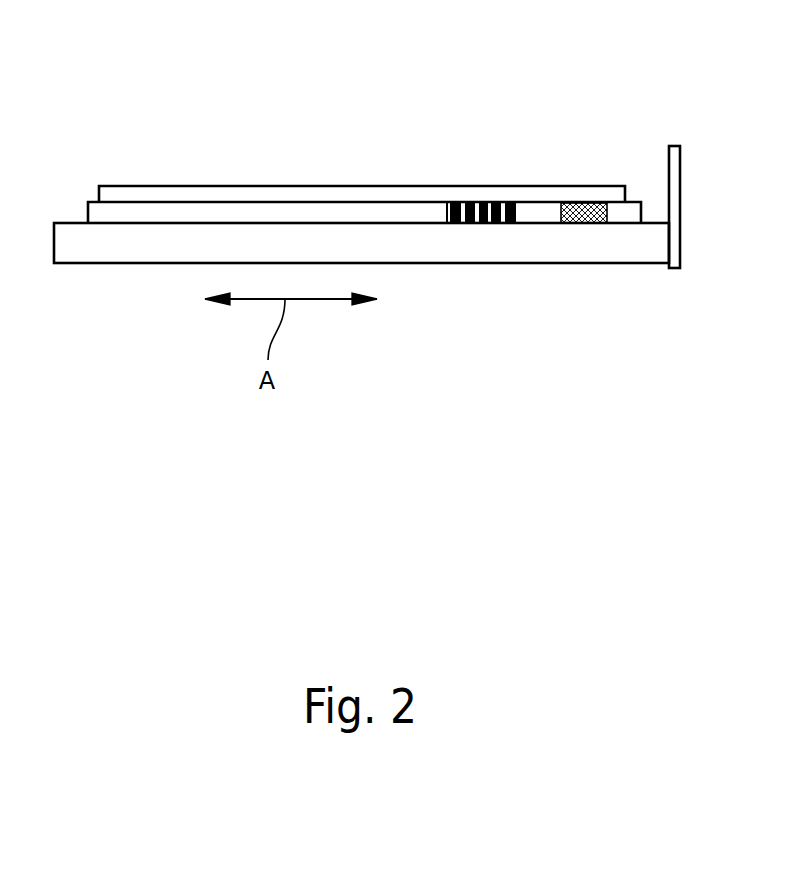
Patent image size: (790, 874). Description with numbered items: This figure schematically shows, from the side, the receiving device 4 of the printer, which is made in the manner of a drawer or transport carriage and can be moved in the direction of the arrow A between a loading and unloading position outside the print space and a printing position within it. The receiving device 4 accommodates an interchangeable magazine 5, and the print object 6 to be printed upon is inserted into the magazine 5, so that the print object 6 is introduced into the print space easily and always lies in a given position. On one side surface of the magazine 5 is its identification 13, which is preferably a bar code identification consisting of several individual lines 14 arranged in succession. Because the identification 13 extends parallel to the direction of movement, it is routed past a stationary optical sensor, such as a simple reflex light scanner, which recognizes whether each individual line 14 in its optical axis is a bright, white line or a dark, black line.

The receiving device 4 is at (560, 275).
The magazine 5 is at (139, 213).
The print object 6 is at (193, 196).
The identification 13 is at (472, 232).
The individual lines 14 is at (449, 203).